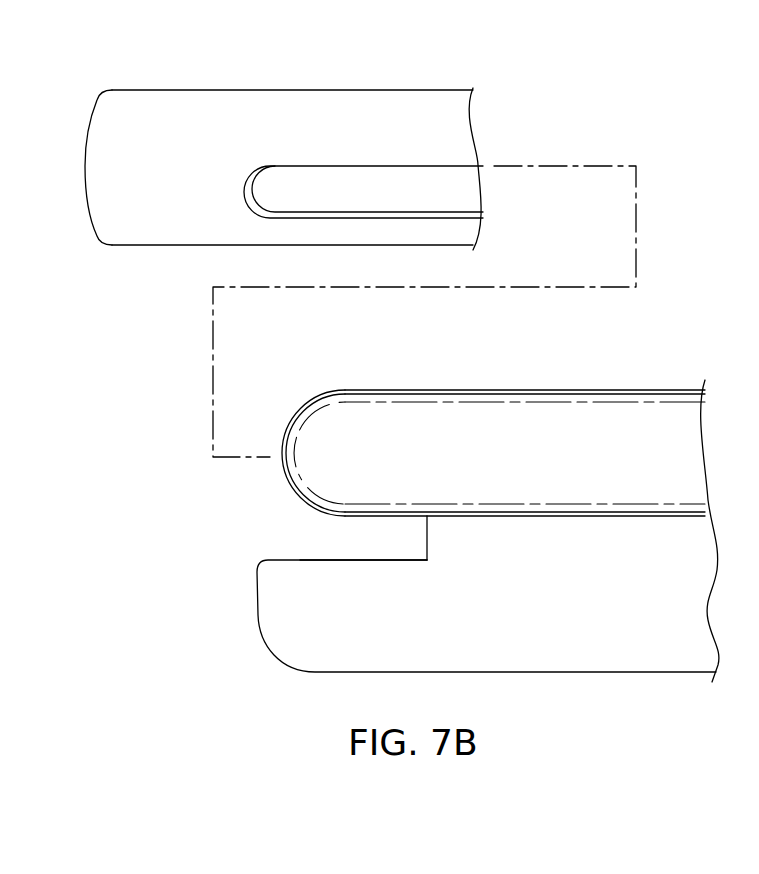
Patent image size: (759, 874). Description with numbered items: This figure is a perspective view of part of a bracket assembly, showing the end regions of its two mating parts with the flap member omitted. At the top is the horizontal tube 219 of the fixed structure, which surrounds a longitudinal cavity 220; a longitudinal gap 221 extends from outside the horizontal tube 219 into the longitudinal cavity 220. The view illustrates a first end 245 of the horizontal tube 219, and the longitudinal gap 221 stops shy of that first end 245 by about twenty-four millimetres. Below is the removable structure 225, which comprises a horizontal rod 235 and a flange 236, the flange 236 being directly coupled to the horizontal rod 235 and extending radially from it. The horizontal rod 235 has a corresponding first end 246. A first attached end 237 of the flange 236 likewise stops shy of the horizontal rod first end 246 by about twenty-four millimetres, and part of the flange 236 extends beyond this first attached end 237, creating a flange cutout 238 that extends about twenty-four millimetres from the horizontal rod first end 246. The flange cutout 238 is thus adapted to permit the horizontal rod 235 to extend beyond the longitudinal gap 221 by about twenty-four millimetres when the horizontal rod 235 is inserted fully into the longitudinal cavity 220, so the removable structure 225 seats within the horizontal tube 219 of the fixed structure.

The horizontal tube 219 is at (380, 88).
The longitudinal cavity 220 is at (348, 186).
The longitudinal gap 221 is at (441, 177).
The removable structure 225 is at (595, 361).
The horizontal rod 235 is at (432, 390).
The flange 236 is at (652, 657).
The first attached end of the flange 237 is at (429, 533).
The flange cutout 238 is at (356, 546).
The first end of the horizontal tube 245 is at (91, 112).
The first end of the horizontal rod 246 is at (287, 427).